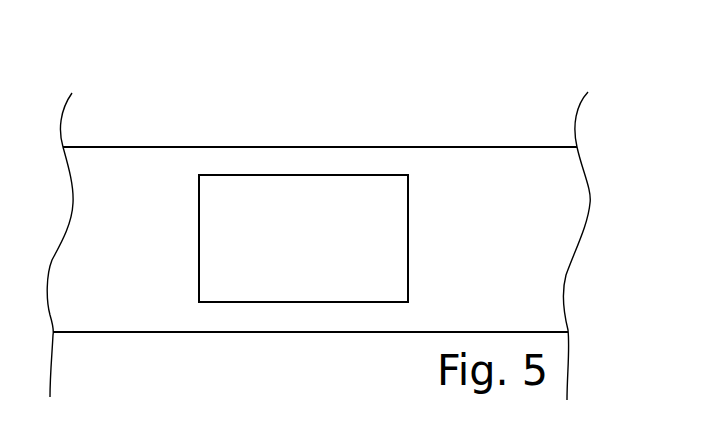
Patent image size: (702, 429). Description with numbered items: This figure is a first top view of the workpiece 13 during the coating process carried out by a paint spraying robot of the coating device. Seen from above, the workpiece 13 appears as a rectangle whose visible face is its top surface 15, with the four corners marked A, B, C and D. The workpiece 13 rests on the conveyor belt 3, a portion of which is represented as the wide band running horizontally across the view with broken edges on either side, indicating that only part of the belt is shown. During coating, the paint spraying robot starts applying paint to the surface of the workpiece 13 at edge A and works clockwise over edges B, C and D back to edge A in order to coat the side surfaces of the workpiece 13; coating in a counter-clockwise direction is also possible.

The conveyor belt 3 is at (556, 200).
The workpiece 13 is at (288, 188).
The top surface 15 is at (304, 241).